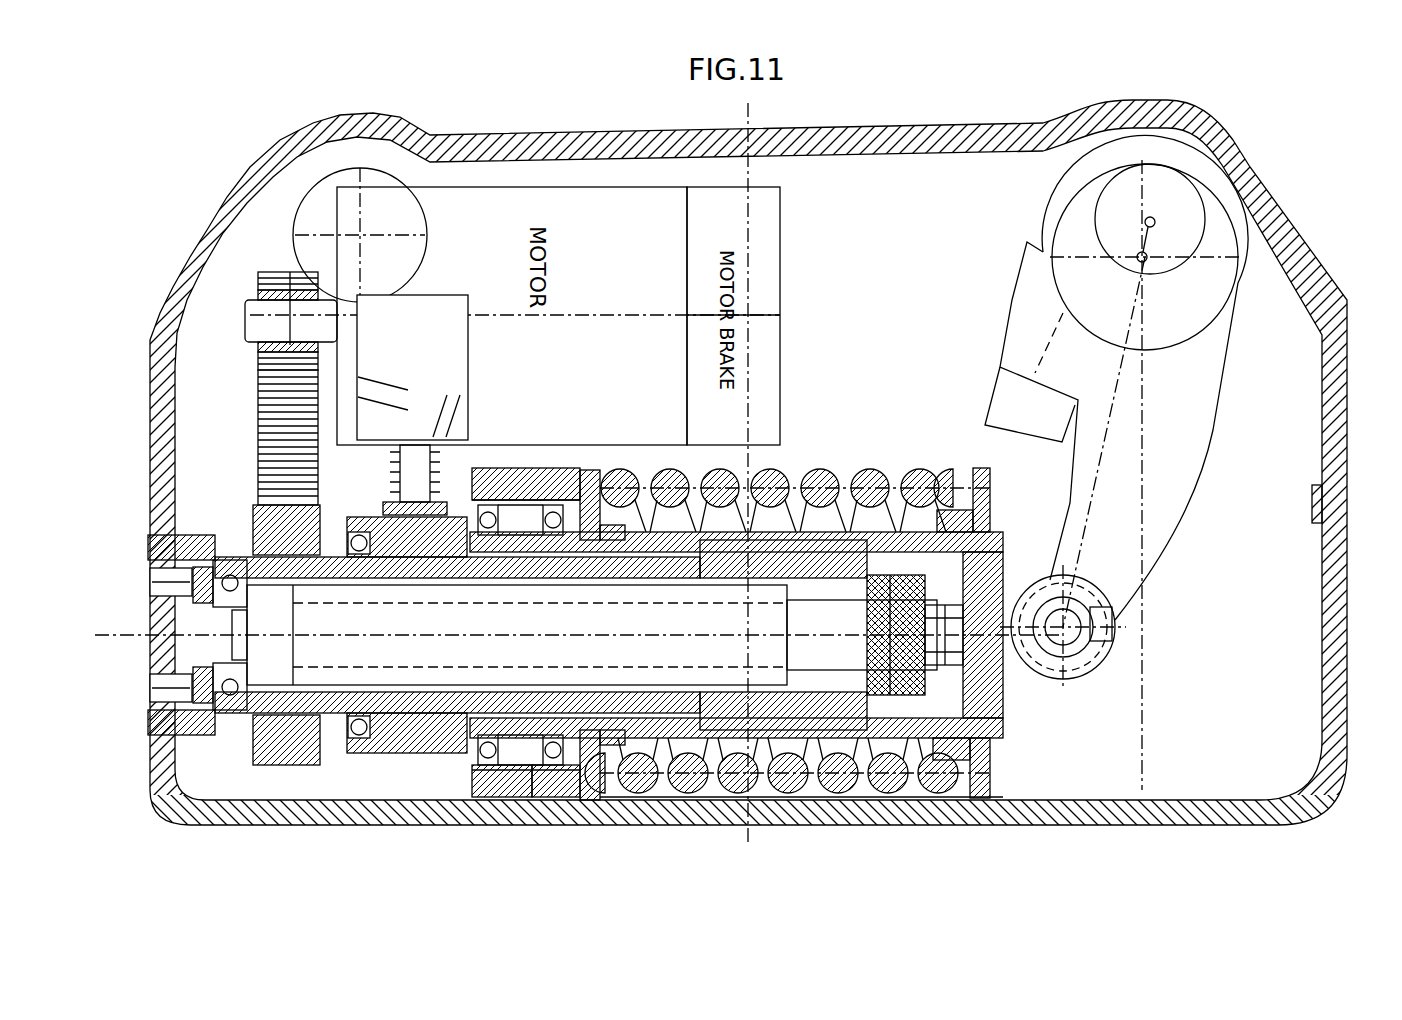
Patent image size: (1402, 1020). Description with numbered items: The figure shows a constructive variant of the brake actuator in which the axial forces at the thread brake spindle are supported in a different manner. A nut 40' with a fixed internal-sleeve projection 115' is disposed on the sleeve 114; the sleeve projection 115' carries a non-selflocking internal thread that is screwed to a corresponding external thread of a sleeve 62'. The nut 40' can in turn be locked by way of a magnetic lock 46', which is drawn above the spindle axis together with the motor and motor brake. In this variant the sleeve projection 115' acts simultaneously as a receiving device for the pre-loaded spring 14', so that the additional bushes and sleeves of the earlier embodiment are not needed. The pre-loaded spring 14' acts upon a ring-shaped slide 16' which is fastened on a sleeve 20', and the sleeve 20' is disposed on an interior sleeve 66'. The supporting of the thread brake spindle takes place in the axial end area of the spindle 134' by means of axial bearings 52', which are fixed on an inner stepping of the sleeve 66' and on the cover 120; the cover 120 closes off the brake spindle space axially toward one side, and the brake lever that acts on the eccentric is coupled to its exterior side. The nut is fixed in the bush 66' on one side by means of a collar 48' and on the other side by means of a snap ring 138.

The sleeve 114 is at (235, 710).
The nut 40' is at (299, 789).
The sleeve projection 115' is at (501, 799).
The sleeve 62' is at (548, 797).
The snap ring 138 is at (805, 683).
The sleeve 20' is at (783, 702).
The interior sleeve 66' is at (609, 778).
The axial bearings 52' is at (794, 801).
The slide 16' is at (991, 708).
The collar 48' is at (407, 754).
The cover 120 is at (1010, 697).
The spindle 134' is at (584, 553).
The pre-loaded spring 14' is at (777, 483).
The magnetic lock 46' is at (417, 338).